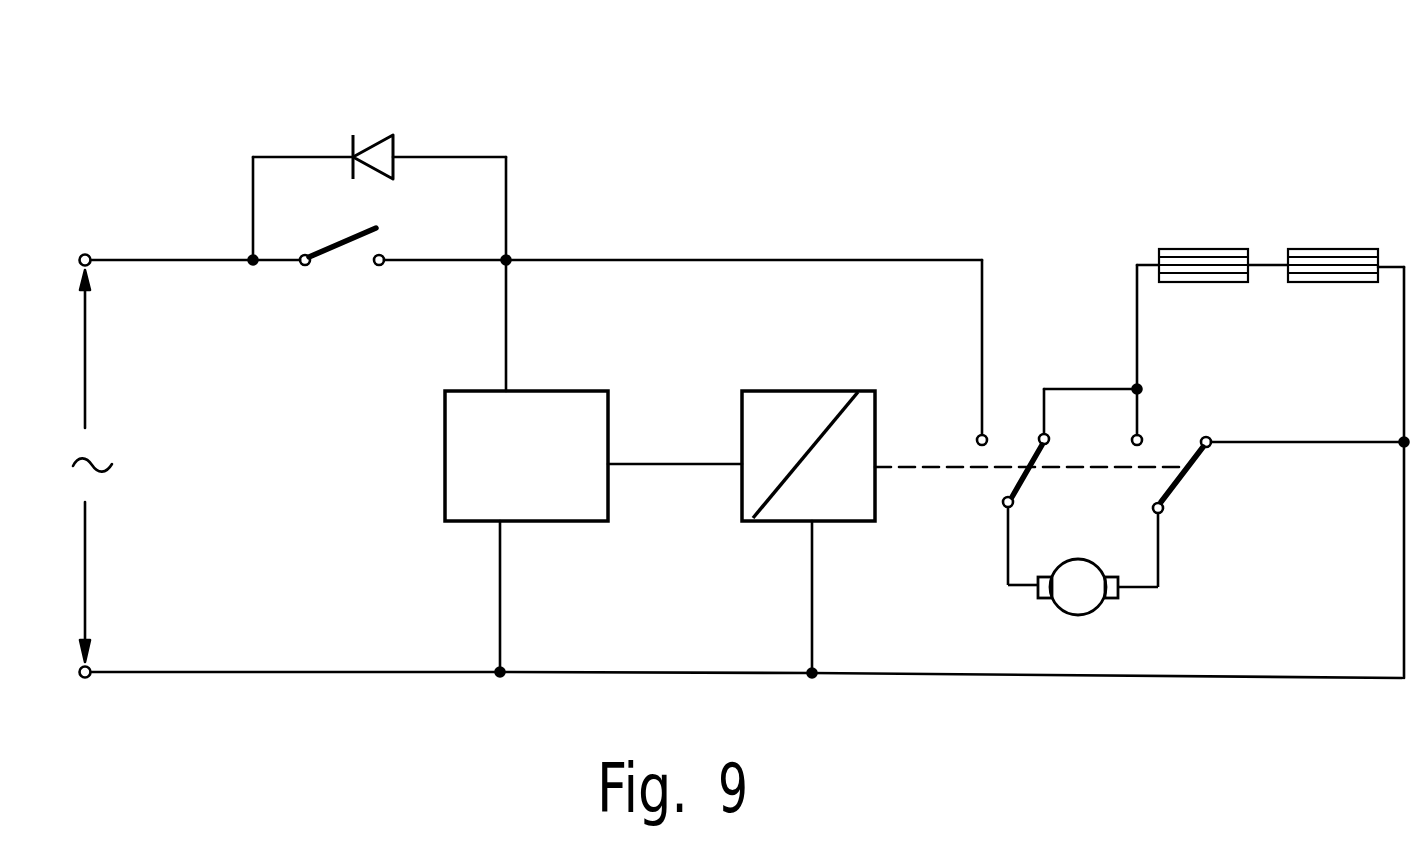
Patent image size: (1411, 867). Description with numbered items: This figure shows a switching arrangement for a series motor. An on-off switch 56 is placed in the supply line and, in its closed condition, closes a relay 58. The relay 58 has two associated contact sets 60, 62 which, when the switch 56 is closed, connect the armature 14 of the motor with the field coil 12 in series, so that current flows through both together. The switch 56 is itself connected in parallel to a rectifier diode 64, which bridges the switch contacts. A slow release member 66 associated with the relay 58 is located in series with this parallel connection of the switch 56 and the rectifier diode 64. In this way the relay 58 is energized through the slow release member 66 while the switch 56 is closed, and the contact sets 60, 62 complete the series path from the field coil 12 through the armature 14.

The field coil 12 is at (1208, 249).
The armature 14 is at (1087, 613).
The on-off switch 56 is at (342, 253).
The relay 58 is at (782, 391).
The contact set 60 is at (1027, 475).
The contact set 62 is at (1197, 470).
The rectifier diode 64 is at (380, 137).
The slow release member 66 is at (443, 467).